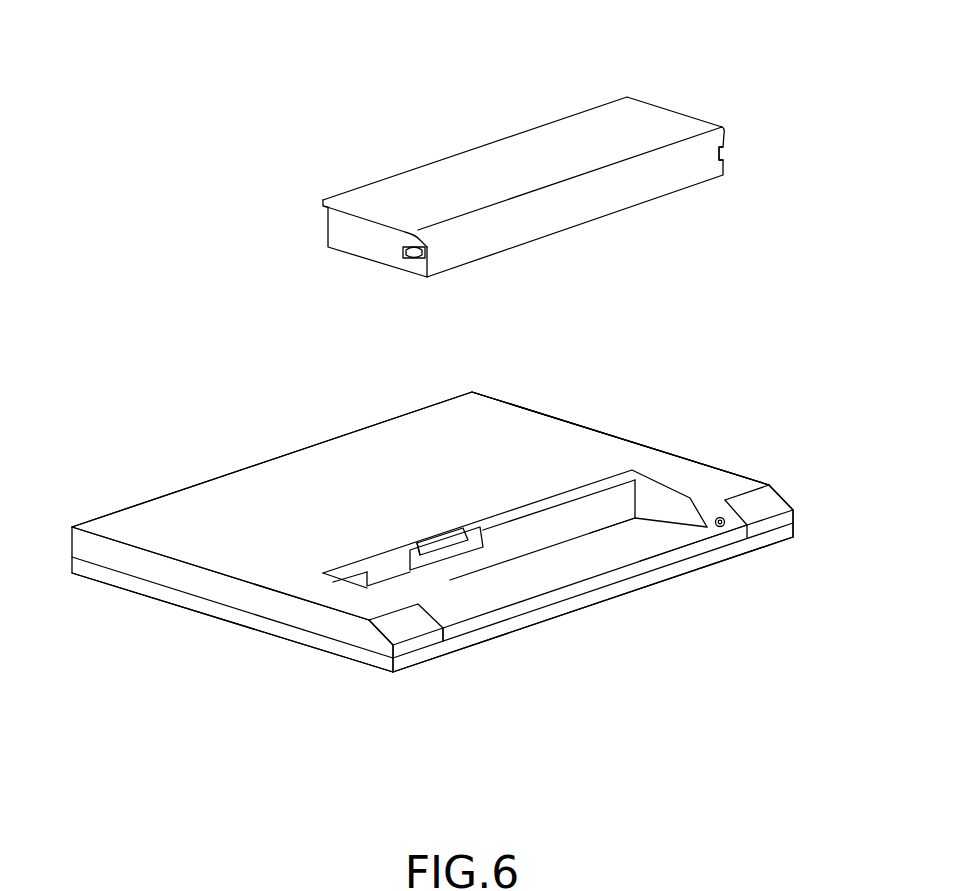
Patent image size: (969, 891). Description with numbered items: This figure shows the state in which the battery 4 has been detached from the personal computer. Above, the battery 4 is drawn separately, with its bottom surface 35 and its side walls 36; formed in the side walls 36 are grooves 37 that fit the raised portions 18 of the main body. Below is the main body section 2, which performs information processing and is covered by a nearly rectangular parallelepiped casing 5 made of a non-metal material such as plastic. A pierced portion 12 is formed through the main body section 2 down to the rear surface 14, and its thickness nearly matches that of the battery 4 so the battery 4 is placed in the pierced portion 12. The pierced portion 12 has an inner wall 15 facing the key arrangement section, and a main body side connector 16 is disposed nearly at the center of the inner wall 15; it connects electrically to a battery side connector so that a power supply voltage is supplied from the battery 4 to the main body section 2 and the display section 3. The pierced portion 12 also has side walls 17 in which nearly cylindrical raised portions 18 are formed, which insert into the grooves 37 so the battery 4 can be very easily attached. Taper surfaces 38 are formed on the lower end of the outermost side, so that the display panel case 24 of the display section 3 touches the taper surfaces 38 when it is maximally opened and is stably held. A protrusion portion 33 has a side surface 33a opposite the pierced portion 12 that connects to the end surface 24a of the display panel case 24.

The main body section 2 is at (627, 413).
The display section 3 is at (251, 637).
The battery 4 is at (668, 94).
The casing 5 is at (568, 412).
The pierced portion 12 is at (673, 499).
The rear surface 14 is at (270, 480).
The inner wall 15 is at (528, 521).
The main body side connector 16 is at (447, 528).
The side walls 17 is at (673, 517).
The raised portions 18 is at (723, 514).
The display panel case 24 is at (352, 654).
The end surface 24a is at (615, 592).
The protrusion portion 33 is at (502, 605).
The side surface 33a is at (708, 547).
The bottom surface 35 is at (491, 160).
The side walls 36 is at (343, 238).
The grooves 37 is at (428, 251).
The taper surfaces 38 is at (410, 627).